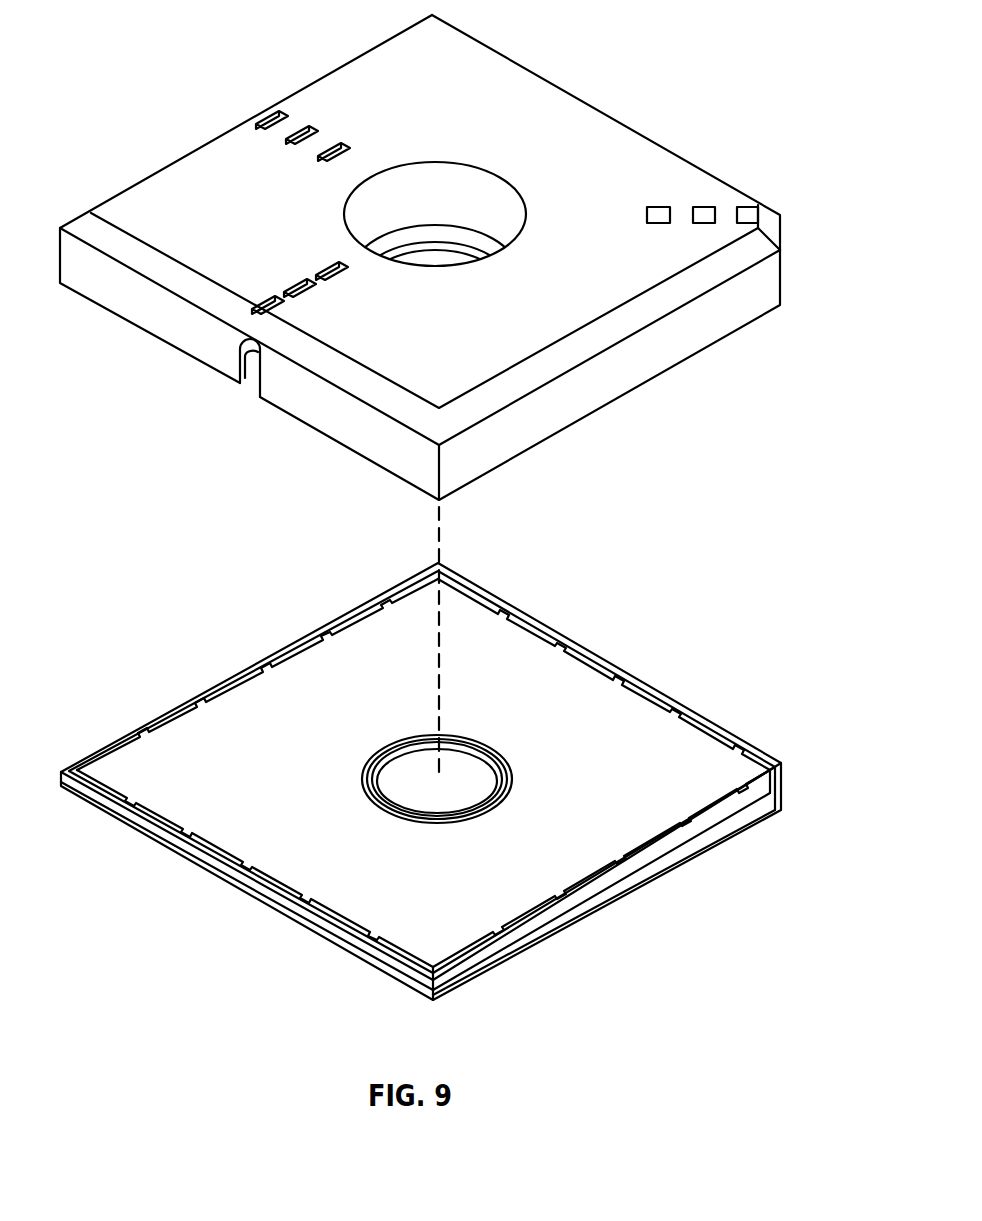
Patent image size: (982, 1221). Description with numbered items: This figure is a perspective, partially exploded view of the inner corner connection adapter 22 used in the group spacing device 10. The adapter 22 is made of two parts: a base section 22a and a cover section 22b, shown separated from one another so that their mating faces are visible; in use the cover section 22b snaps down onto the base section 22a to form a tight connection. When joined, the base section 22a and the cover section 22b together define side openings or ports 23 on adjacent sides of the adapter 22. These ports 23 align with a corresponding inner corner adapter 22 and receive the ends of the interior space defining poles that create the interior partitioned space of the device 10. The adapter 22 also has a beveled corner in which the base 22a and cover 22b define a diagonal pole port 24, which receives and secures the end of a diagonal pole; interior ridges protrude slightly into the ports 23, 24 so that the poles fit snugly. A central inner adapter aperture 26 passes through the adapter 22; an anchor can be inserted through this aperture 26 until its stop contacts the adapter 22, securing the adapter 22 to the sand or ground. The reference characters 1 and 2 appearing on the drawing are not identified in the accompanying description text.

The group spacing device 10 is at (791, 76).
The inner corner connection adapter 22 is at (580, 57).
The base section 22a is at (640, 385).
The cover section 22b is at (678, 702).
The side openings or ports 23 is at (264, 114).
The diagonal pole port 24 is at (782, 230).
The inner adapter aperture 26 is at (430, 162).
The sensor element 1 is at (484, 163).
The base substrate 2 is at (138, 704).